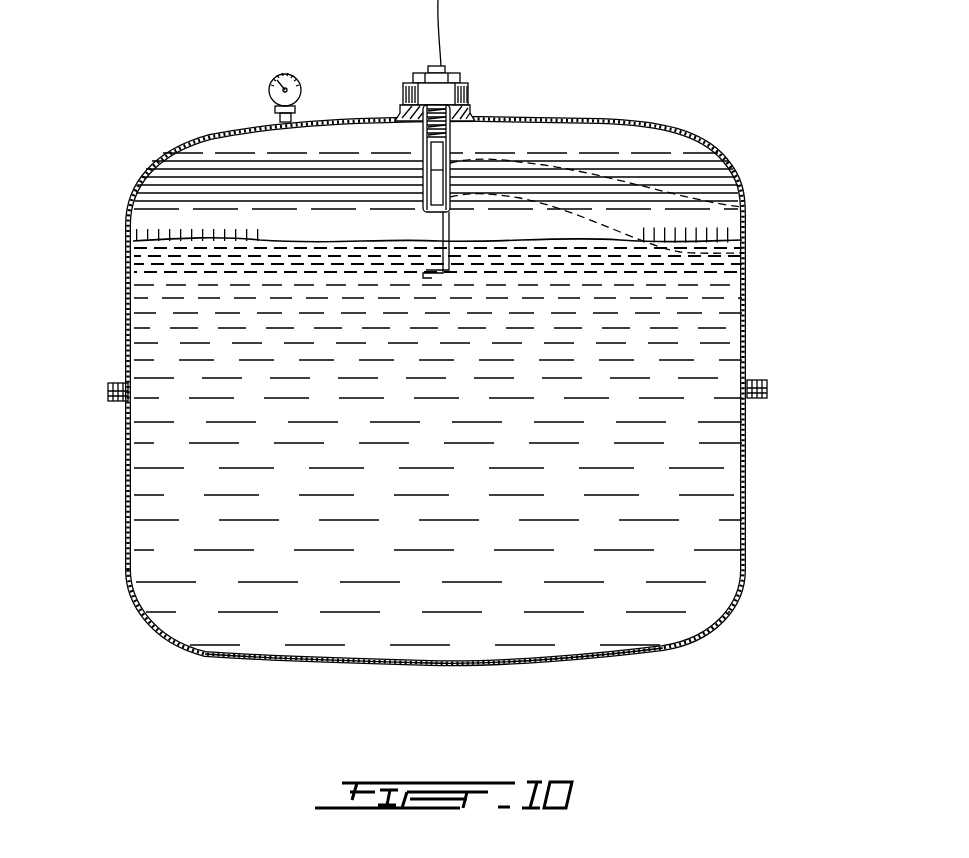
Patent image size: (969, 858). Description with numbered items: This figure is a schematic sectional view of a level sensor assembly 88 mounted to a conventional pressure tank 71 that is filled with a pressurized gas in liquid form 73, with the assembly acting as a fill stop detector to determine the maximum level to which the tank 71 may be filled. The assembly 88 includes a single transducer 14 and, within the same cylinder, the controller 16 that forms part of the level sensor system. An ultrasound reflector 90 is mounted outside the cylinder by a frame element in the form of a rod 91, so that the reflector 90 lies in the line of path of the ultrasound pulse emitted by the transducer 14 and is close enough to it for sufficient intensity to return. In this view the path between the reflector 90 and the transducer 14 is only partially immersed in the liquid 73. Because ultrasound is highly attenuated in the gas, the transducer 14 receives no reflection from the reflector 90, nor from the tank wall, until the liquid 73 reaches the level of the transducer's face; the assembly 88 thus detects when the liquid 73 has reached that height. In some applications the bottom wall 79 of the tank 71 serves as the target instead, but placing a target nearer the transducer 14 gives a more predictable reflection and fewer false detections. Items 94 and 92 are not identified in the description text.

The level sensor assembly 88 is at (466, 141).
The tank 71 is at (751, 168).
The controller 16 is at (742, 207).
The transducer 14 is at (742, 253).
The rod 91 is at (452, 244).
The liquid 73 is at (675, 447).
The bottom wall 79 is at (548, 655).
The vapor space 94 is at (209, 219).
The liquid level 92 is at (352, 248).
The ultrasound reflector 90 is at (433, 273).